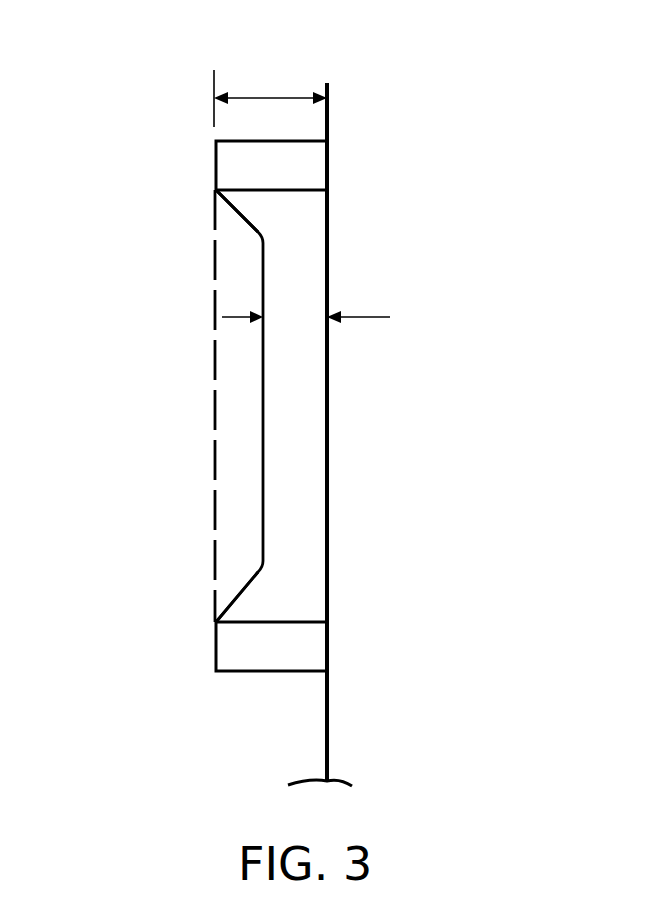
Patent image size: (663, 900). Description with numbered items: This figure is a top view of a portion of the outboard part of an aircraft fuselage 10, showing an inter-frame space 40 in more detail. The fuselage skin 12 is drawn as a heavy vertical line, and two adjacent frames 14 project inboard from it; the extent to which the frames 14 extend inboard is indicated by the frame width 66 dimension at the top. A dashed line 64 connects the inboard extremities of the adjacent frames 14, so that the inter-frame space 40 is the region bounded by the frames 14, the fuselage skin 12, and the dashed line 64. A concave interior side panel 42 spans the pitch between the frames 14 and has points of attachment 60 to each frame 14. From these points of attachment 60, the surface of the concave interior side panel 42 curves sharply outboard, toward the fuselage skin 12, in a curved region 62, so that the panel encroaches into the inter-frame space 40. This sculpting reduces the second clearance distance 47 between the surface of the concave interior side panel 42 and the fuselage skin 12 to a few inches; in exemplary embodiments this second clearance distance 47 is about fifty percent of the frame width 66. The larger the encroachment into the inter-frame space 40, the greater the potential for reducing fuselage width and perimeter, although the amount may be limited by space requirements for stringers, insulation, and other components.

The fuselage 10 is at (332, 710).
The fuselage skin 12 is at (330, 588).
The frames 14 is at (303, 163).
The inter-frame space 40 is at (243, 470).
The concave interior side panel 42 is at (262, 422).
The second clearance distance 47 is at (300, 318).
The points of attachment 60 is at (215, 190).
The curved region 62 is at (250, 242).
The dashed line 64 is at (205, 541).
The frame width 66 is at (262, 97).